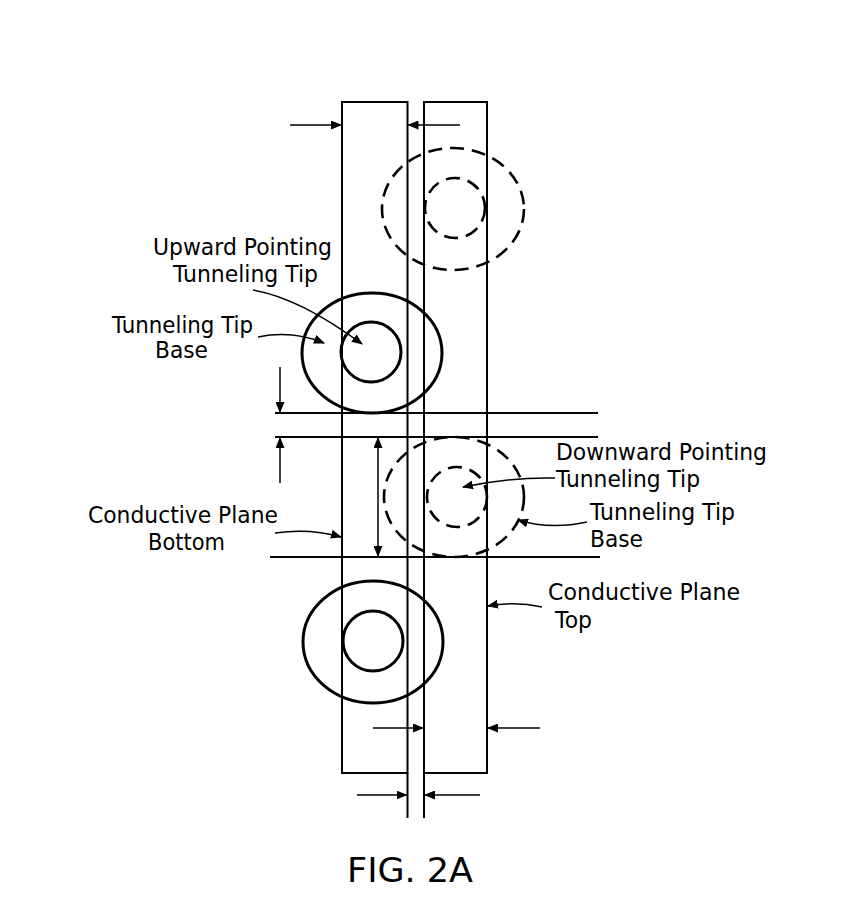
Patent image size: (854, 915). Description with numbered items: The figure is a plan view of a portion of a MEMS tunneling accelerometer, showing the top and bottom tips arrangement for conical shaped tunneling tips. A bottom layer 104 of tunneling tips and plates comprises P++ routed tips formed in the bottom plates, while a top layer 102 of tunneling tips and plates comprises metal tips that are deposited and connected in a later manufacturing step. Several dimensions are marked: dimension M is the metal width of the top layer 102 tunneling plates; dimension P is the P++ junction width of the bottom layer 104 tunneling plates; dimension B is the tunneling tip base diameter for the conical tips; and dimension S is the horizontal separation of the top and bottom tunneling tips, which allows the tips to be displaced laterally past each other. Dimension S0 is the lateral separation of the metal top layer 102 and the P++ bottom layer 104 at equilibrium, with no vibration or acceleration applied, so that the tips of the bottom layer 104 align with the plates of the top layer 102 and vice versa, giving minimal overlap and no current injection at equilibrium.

The top layer 102 is at (457, 96).
The bottom layer 104 is at (372, 96).
The P++ junction width P is at (375, 126).
The tunneling tip separation S is at (267, 425).
The tunneling tip base diameter B is at (361, 497).
The metal width M is at (456, 729).
The lateral separation of metal and P++ layers S0 is at (403, 796).